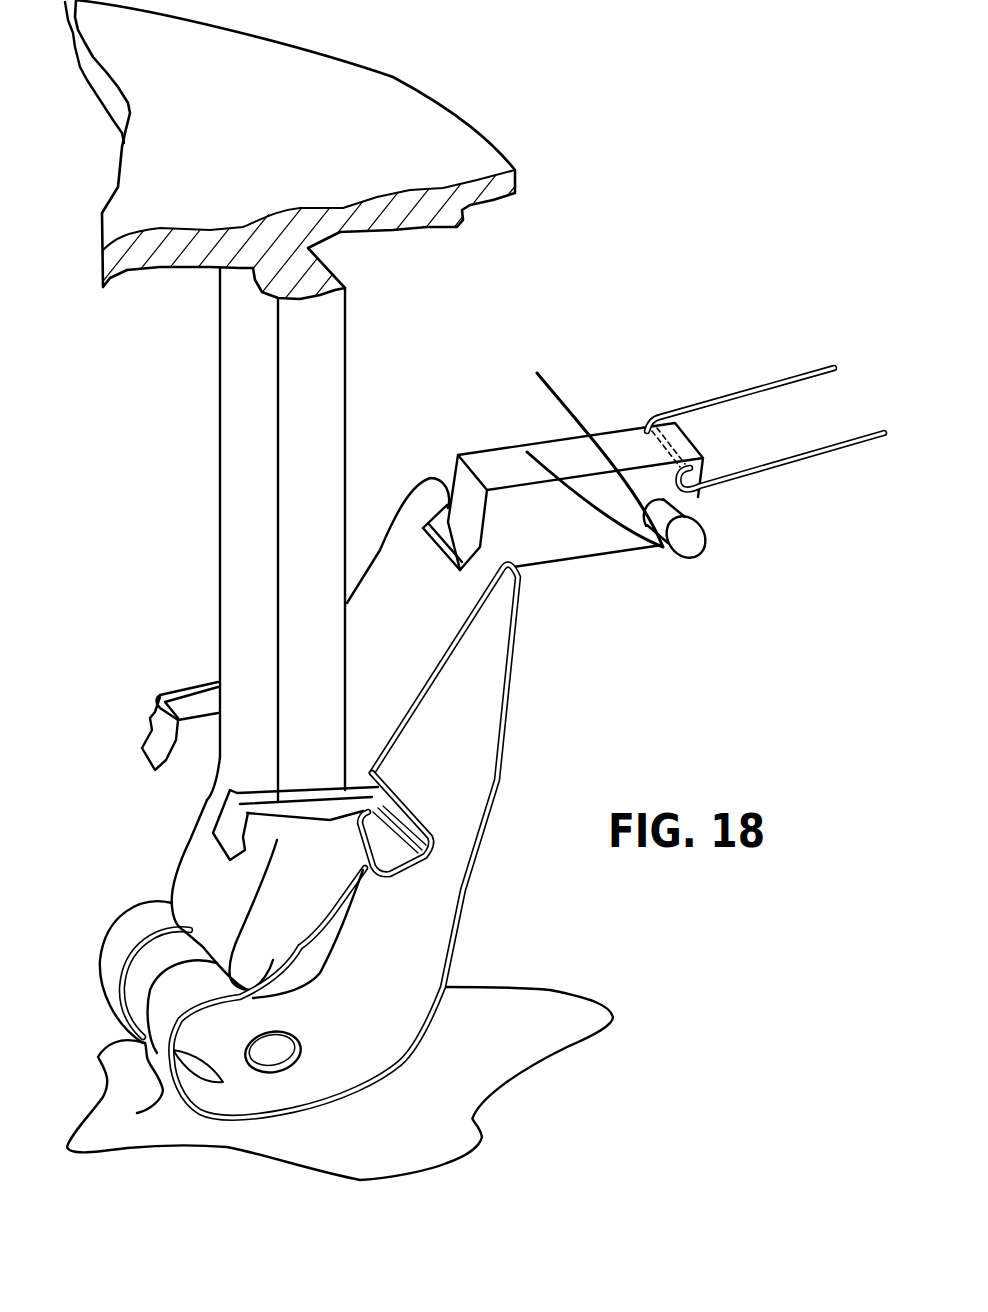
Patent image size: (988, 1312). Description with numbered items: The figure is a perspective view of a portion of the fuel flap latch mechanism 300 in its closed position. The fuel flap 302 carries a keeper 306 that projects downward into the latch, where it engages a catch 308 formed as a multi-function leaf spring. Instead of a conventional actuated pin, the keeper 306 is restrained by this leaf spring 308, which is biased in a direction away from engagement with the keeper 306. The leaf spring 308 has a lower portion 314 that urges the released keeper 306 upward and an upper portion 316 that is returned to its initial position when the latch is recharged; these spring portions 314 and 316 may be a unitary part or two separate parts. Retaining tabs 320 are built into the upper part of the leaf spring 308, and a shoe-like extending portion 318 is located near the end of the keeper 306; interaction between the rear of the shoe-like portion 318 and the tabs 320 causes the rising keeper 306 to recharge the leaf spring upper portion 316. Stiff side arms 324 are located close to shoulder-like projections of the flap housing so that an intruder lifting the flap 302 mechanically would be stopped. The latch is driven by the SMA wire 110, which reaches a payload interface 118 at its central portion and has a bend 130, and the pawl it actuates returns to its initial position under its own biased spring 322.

The fuel flap 302 is at (463, 143).
The keeper 306 is at (345, 393).
The fuel flap latch mechanism 300 is at (600, 352).
The lower portion of the leaf spring 314 is at (485, 467).
The biased spring 322 is at (623, 528).
The payload interface 118 is at (636, 437).
The SMA wire 110 is at (763, 380).
The bend 130 is at (699, 506).
The upper portion of the leaf spring 316 is at (395, 655).
The retaining tabs 320 is at (210, 680).
The catch 308 is at (389, 841).
The stiff side arms 324 is at (432, 863).
The shoe-like extending portion 318 is at (333, 923).